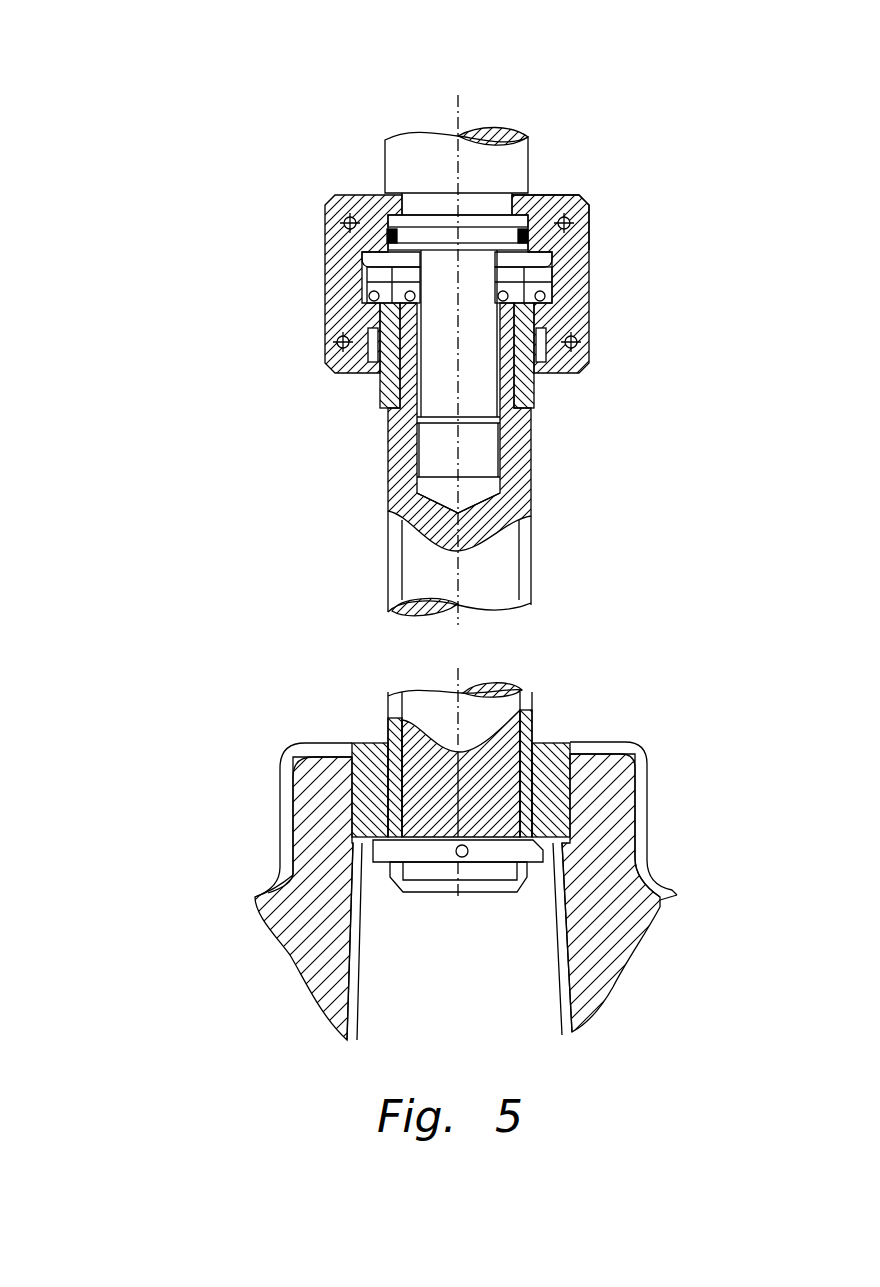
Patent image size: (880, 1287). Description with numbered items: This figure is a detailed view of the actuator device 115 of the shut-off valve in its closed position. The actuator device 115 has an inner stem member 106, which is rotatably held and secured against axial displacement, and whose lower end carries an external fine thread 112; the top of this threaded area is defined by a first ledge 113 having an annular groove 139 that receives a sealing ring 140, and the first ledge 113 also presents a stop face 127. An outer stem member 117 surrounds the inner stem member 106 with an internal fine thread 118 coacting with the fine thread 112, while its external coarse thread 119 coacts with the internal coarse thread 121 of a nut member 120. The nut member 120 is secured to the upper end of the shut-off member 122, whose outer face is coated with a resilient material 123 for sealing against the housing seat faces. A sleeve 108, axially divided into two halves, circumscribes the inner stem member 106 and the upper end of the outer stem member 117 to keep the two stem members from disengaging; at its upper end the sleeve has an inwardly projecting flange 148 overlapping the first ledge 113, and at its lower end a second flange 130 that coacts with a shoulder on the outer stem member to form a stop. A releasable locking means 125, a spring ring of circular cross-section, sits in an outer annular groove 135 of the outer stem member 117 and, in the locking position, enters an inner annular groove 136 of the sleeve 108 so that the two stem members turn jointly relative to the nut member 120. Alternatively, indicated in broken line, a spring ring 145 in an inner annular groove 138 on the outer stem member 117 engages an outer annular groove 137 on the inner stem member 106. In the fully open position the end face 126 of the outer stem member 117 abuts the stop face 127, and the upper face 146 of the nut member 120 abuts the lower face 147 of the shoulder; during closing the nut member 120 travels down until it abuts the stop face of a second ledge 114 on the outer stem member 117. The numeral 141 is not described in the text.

The inner stem member 106 is at (490, 408).
The sleeve 108 is at (345, 372).
The fine thread 112 is at (500, 418).
The first ledge 113 is at (445, 217).
The second ledge 114 is at (545, 860).
The actuator device 115 is at (165, 165).
The outer stem member 117 is at (498, 515).
The internal fine thread 118 is at (492, 442).
The external coarse thread 119 is at (525, 565).
The nut member 120 is at (573, 742).
The internal coarse thread 121 is at (510, 750).
The shut-off member 122 is at (317, 903).
The resilient material 123 is at (280, 801).
The releasable locking means 125 is at (375, 305).
The end face 126 is at (372, 272).
The stop face 127 is at (392, 258).
The second flange 130 is at (362, 376).
The outer annular groove 135 is at (372, 290).
The inner annular groove 136 is at (365, 250).
The outer annular groove 137 is at (560, 250).
The inner annular groove 138 is at (556, 273).
The annular groove 139 is at (435, 237).
The sealing ring 140 is at (496, 223).
The pocket 141 is at (372, 345).
The spring ring 145 is at (556, 292).
The upper face 146 is at (367, 742).
The lower face 147 is at (383, 413).
The inwardly projecting flange 148 is at (543, 200).